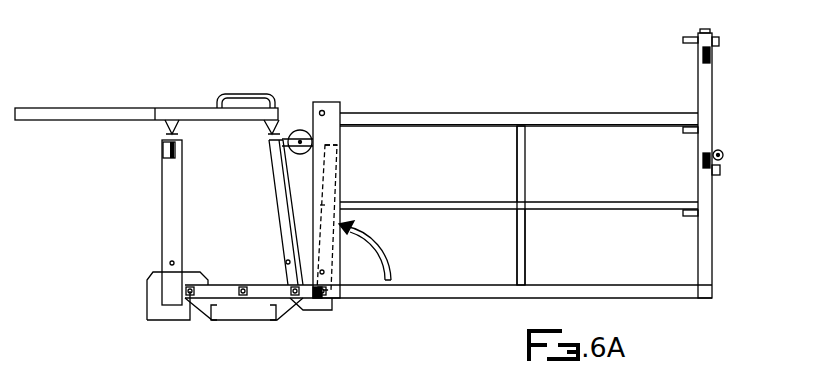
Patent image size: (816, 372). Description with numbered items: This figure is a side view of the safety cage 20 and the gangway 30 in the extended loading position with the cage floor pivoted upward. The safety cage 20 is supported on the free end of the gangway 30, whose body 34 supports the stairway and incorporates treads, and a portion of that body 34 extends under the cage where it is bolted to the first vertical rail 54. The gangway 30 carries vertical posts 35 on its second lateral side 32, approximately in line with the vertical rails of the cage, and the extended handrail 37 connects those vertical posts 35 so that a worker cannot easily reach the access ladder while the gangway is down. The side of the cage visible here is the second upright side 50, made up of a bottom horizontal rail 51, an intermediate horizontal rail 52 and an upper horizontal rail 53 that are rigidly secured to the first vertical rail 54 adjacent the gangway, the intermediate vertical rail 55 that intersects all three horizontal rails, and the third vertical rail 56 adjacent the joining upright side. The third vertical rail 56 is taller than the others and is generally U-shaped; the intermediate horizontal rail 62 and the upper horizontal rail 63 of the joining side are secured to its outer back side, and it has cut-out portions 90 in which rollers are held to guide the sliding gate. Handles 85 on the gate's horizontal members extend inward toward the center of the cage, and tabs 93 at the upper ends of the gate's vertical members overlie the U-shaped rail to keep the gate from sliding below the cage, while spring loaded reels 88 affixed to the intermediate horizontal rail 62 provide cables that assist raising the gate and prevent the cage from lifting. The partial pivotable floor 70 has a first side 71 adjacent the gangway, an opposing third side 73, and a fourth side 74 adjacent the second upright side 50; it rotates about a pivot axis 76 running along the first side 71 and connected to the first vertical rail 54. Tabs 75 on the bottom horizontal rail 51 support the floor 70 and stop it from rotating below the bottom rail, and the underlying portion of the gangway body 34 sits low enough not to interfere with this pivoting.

The safety cage 20 is at (457, 78).
The gangway 30 is at (127, 230).
The second lateral side 32 is at (246, 314).
The body 34 is at (180, 313).
The vertical posts 35 is at (171, 191).
The handrail 37 is at (96, 112).
The second upright side 50 is at (478, 120).
The bottom horizontal rail 51 is at (522, 284).
The intermediate horizontal rail 52 is at (522, 214).
The upper horizontal rail 53 is at (522, 130).
The first vertical rail 54 is at (338, 109).
The intermediate vertical rail 55 is at (524, 196).
The third vertical rail 56 is at (705, 244).
The intermediate horizontal rail 62 is at (719, 173).
The upper horizontal rail 63 is at (717, 43).
The partial pivotable floor 70 is at (336, 170).
The first side 71 is at (340, 299).
The third side 73 is at (337, 148).
The fourth side 74 is at (336, 202).
The tabs 75 is at (440, 300).
The pivot axis 76 is at (334, 302).
The handle 85 is at (692, 45).
The spring loaded reels 88 is at (719, 150).
The cut-out portions 90 is at (711, 58).
The tabs 93 is at (708, 33).